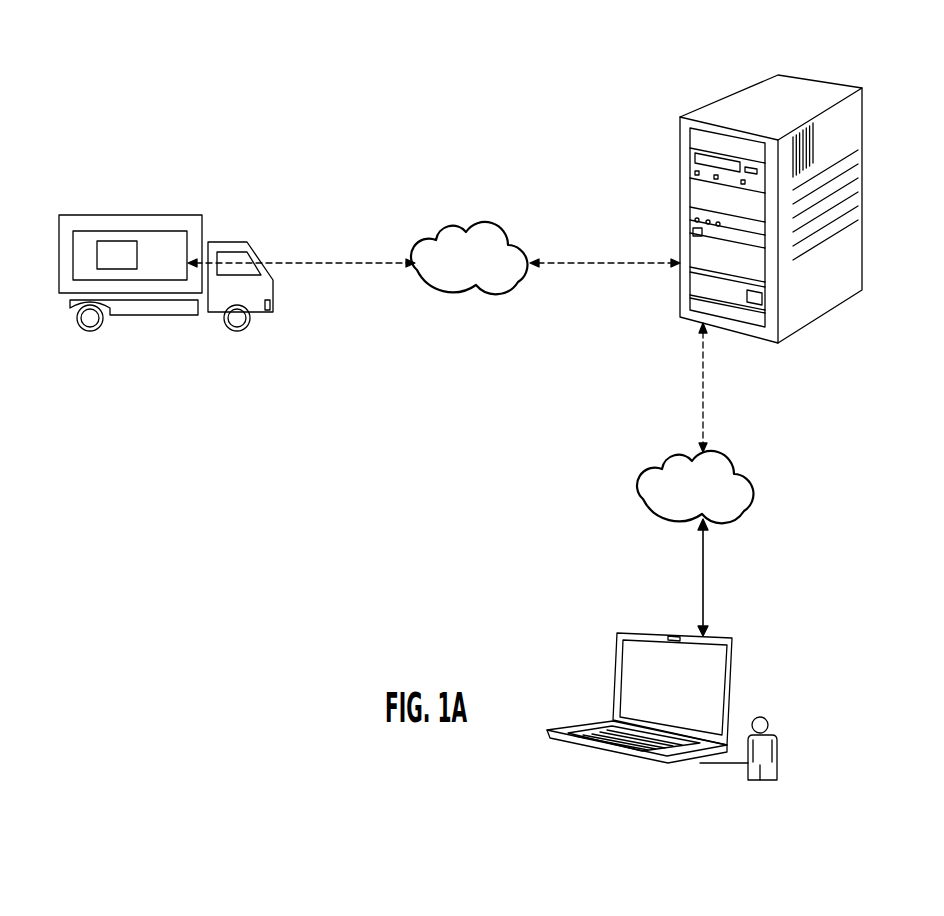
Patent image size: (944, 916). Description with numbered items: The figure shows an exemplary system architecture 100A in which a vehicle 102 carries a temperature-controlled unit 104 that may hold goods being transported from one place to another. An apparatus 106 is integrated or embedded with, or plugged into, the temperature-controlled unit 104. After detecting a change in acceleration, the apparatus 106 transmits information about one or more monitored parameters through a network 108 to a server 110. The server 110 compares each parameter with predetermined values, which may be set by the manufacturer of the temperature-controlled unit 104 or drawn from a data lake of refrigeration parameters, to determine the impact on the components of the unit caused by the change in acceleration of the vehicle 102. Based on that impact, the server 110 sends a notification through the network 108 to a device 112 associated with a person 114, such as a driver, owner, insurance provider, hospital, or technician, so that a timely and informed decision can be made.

The system architecture 100A is at (432, 100).
The vehicle 102 is at (243, 243).
The temperature-controlled unit 104 is at (185, 238).
The apparatus 106 is at (112, 240).
The network 108 is at (500, 222).
The server 110 is at (815, 92).
The device 112 is at (725, 635).
The person 114 is at (773, 730).